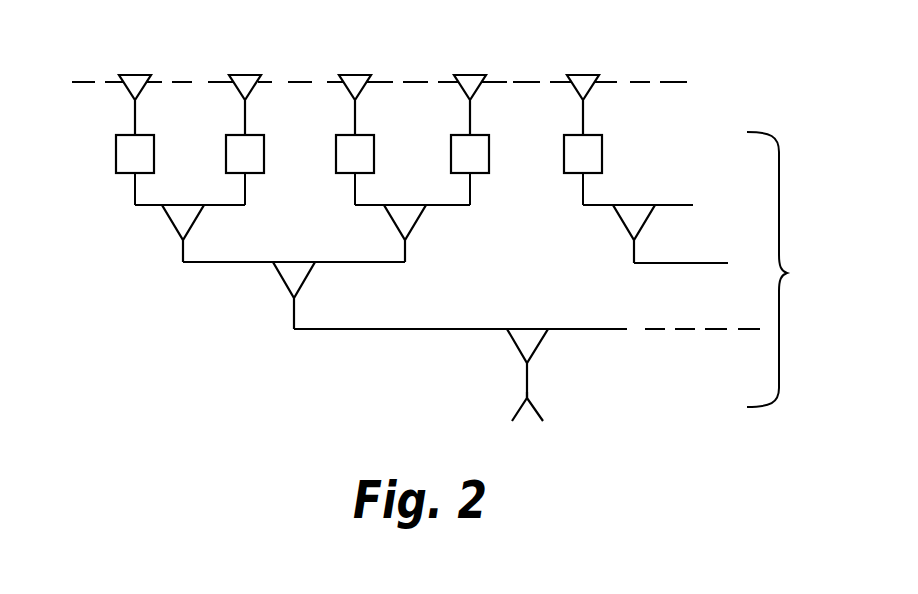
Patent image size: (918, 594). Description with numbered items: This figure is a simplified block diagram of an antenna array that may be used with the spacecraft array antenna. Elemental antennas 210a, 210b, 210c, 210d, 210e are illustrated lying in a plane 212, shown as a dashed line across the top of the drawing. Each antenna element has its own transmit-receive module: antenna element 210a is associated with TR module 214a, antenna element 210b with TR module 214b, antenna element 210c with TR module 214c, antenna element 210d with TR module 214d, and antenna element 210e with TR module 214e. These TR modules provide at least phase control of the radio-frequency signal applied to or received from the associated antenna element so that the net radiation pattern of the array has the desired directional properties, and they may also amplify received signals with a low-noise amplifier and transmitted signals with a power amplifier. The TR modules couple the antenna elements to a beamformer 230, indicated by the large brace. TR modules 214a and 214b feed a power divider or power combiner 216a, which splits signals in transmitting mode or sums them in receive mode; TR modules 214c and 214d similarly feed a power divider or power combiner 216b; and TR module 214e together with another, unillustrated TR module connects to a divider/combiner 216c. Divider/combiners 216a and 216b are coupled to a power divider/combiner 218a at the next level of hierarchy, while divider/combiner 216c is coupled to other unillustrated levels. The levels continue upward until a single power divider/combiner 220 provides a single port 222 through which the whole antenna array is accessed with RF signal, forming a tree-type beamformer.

The elemental antenna 210a is at (131, 75).
The elemental antenna 210b is at (241, 75).
The elemental antenna 210c is at (351, 75).
The elemental antenna 210d is at (466, 75).
The elemental antenna 210e is at (579, 75).
The plane 212 is at (684, 86).
The TR module 214a is at (120, 135).
The TR module 214b is at (229, 135).
The TR module 214c is at (338, 135).
The TR module 214d is at (452, 135).
The TR module 214e is at (565, 135).
The power divider or power combiner 216a is at (172, 222).
The power divider or power combiner 216b is at (395, 222).
The divider/combiner 216c is at (623, 222).
The power divider/combiner 218a is at (284, 289).
The single power divider/combiner 220 is at (517, 350).
The single port 222 is at (535, 398).
The beamformer 230 is at (793, 269).